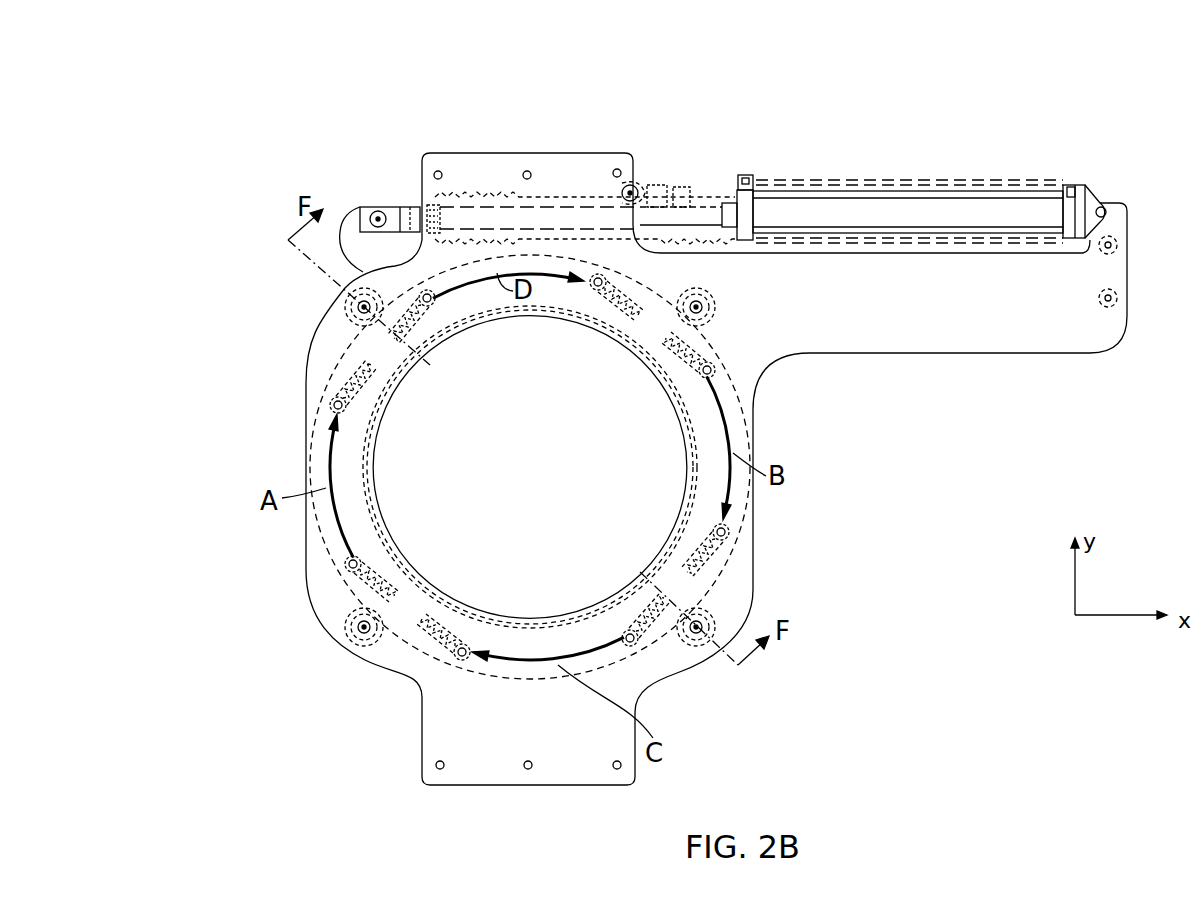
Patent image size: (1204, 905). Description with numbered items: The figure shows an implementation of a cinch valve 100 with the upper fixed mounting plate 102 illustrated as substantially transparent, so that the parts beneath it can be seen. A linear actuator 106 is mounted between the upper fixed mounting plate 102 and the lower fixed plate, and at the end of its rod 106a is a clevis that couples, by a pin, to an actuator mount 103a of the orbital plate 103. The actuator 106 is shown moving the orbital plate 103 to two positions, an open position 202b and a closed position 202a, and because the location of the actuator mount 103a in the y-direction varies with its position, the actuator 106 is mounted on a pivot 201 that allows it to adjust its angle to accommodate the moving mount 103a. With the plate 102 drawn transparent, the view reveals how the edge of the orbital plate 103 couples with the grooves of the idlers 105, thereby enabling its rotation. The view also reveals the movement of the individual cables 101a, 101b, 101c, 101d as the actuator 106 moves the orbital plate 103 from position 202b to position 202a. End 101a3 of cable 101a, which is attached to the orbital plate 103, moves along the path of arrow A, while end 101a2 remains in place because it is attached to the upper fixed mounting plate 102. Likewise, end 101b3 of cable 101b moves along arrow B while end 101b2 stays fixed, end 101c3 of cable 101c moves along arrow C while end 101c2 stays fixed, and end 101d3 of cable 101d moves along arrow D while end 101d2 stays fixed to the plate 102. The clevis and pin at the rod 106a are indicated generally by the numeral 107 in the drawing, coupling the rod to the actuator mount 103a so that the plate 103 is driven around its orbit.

The cinch valve 100 is at (205, 62).
The cable 101a is at (531, 618).
The cable 101b is at (517, 317).
The cable 101c is at (686, 460).
The cable 101d is at (380, 484).
The end of cable 101a 101a2 is at (737, 544).
The end of cable 101a 101a3 is at (346, 572).
The end of cable 101b 101b2 is at (330, 400).
The end of cable 101b 101b3 is at (716, 382).
The end of cable 101c 101c2 is at (592, 302).
The end of cable 101c 101c3 is at (640, 652).
The end of cable 101d 101d2 is at (452, 668).
The end of cable 101d 101d3 is at (449, 322).
The upper fixed mounting plate 102 is at (813, 360).
The orbital plate 103 is at (738, 435).
The actuator mount 103a is at (376, 207).
The idlers 105 is at (348, 306).
The linear actuator 106 is at (880, 191).
The rod 106a is at (480, 200).
The pivot pin 107 is at (403, 205).
The pivot 201 is at (1104, 207).
The closed position 202a is at (595, 185).
The open position 202b is at (358, 210).